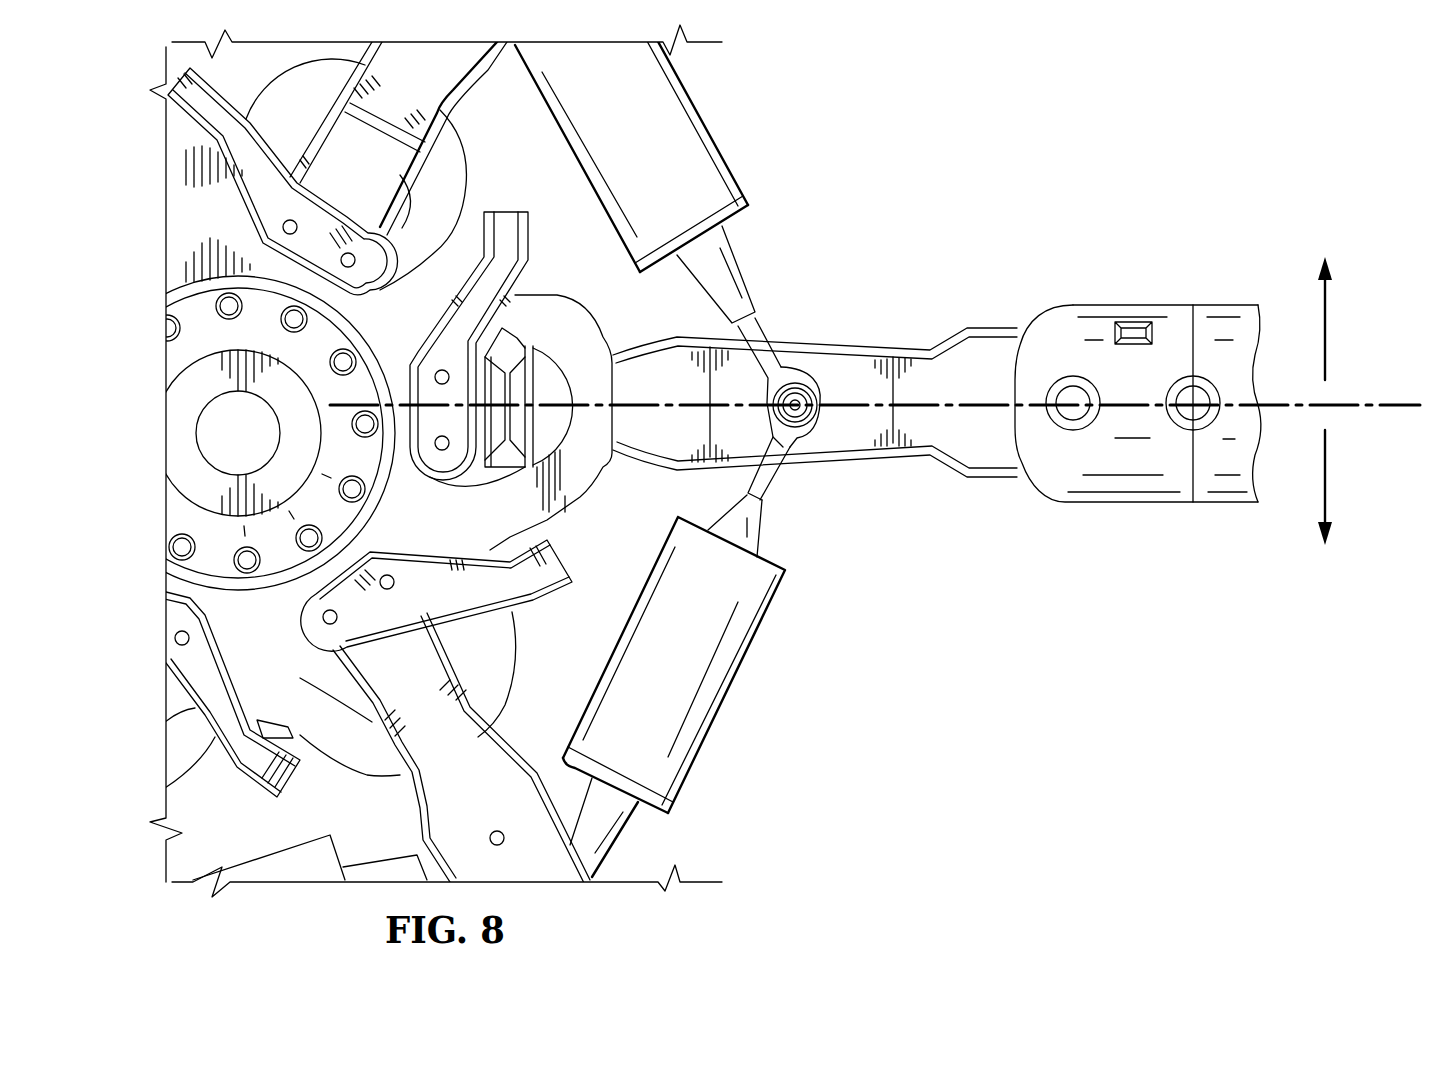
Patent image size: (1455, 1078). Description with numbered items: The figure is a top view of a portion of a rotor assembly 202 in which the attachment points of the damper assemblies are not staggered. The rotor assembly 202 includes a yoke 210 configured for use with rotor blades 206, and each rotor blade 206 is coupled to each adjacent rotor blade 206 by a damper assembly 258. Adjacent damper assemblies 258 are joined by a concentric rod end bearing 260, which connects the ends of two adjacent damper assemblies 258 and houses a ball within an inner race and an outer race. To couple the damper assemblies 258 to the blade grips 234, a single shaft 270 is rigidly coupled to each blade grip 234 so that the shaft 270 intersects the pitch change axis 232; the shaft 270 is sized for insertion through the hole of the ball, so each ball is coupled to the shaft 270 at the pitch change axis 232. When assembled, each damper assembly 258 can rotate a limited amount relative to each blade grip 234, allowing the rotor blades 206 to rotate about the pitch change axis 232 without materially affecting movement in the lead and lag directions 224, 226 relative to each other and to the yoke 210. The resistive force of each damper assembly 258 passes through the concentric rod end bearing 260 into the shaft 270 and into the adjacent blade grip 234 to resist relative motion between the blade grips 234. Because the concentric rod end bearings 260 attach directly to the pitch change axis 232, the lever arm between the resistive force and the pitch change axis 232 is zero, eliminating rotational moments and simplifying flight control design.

The rotor assembly 202 is at (856, 142).
The rotor blade 206 is at (1175, 312).
The yoke 210 is at (164, 160).
The lead direction 224 is at (1333, 318).
The lag direction 226 is at (1333, 482).
The pitch change axis 232 is at (1417, 398).
The blade grip 234 is at (882, 347).
The damper assembly 258 is at (702, 120).
The concentric rod end bearing 260 is at (812, 432).
The shaft 270 is at (797, 402).